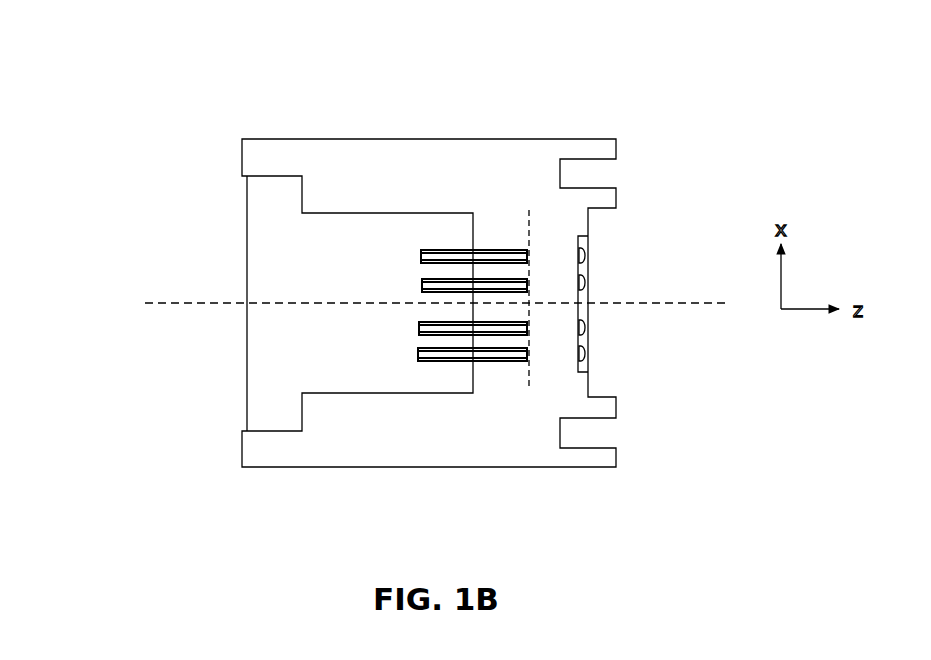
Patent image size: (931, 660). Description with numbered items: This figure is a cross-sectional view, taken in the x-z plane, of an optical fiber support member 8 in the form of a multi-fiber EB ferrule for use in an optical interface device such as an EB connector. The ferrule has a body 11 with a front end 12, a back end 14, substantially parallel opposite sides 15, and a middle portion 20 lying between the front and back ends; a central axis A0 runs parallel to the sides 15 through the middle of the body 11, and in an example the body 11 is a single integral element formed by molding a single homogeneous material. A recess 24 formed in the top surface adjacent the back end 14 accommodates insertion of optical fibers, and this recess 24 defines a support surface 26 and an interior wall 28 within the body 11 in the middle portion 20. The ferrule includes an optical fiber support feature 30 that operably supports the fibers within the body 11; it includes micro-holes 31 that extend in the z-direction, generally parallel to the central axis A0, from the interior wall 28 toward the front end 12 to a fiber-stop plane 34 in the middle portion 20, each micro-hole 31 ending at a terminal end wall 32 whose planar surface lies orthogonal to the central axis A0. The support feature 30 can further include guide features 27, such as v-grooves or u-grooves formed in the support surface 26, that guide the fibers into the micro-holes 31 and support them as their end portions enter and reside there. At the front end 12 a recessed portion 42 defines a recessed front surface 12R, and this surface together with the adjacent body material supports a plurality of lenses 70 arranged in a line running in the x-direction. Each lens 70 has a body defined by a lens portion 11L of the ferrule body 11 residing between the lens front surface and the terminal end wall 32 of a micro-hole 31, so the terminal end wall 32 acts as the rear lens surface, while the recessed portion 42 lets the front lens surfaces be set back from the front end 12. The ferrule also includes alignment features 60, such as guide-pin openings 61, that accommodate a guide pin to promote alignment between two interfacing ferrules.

The optical fiber support member 8 is at (158, 169).
The body 11 is at (327, 160).
The back end 14 is at (242, 152).
The sides 15 is at (554, 137).
The front end 12 is at (618, 147).
The guide-pin openings 61 is at (602, 174).
The support surface 26 is at (263, 242).
The recess 24 is at (270, 282).
The central axis A0 is at (207, 305).
The interior wall 28 is at (472, 222).
The micro-hole 31 is at (500, 250).
The terminal end wall 32 is at (520, 250).
The optical fiber support feature 30 is at (495, 372).
The guide features 27 is at (425, 280).
The fiber-stop plane 34 is at (528, 383).
The lens portion 11L is at (566, 291).
The recessed front surface 12R is at (589, 226).
The lenses 70 is at (588, 282).
The recessed portion 42 is at (605, 357).
The alignment features 60 is at (637, 433).
The middle portion 20 is at (310, 477).